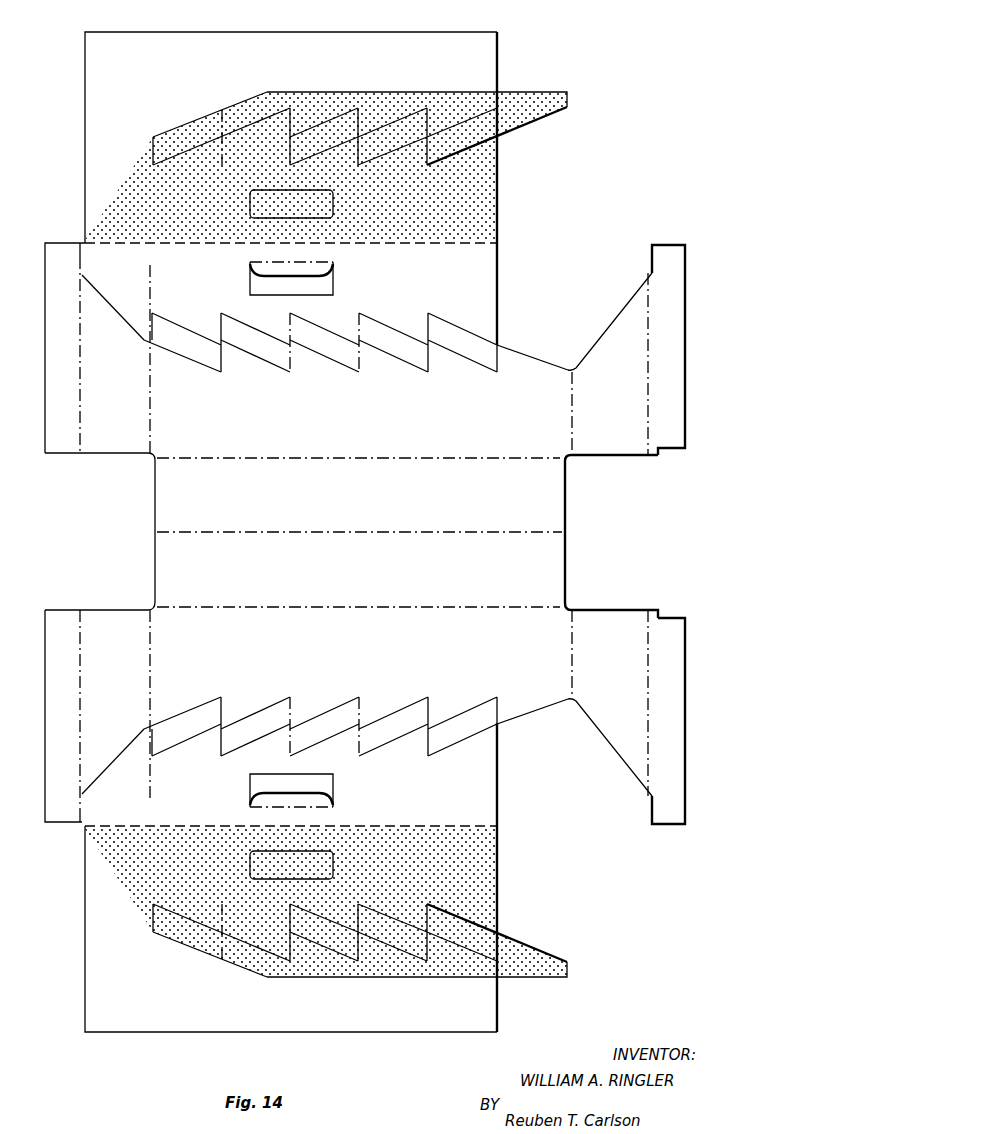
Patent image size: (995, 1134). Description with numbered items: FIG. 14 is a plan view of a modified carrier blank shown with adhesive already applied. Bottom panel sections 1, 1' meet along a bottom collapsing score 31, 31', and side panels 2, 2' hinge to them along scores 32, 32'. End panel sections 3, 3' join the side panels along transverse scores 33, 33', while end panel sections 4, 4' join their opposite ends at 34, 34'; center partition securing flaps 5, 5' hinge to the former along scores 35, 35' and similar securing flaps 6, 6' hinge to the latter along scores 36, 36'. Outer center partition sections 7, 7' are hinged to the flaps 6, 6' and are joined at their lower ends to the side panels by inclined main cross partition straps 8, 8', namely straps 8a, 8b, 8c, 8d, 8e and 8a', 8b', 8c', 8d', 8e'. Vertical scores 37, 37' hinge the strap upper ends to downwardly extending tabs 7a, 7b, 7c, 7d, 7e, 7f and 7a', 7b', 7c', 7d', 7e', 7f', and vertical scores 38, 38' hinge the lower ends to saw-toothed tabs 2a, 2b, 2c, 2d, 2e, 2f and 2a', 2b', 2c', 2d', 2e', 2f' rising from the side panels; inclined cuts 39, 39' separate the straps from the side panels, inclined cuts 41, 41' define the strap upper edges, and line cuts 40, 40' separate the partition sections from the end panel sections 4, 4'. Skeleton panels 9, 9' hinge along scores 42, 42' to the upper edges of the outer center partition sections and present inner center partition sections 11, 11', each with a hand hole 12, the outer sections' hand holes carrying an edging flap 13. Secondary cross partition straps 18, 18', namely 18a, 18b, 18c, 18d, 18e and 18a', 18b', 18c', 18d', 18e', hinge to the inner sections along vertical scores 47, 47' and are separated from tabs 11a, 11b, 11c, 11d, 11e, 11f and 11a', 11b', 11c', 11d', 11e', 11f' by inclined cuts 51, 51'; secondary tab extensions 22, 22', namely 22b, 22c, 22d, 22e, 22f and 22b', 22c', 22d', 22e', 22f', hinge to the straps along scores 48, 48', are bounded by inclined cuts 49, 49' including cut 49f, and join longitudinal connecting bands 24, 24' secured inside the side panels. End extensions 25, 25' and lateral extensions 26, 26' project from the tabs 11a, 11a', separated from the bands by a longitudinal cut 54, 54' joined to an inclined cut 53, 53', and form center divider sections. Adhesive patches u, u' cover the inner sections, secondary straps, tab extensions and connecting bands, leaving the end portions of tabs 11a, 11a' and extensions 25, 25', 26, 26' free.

The bottom panel 1 is at (360, 495).
The bottom panel 1' is at (360, 569).
The side wall panel 2 is at (358, 434).
The side wall panel 2' is at (358, 652).
The side wall section 2a is at (224, 357).
The side wall section 2b is at (291, 361).
The side wall section 2c is at (363, 358).
The side wall section 2d is at (432, 358).
The side wall section 2e is at (462, 365).
The side wall section 2f is at (527, 365).
The side wall section 2a' is at (224, 713).
The side wall section 2b' is at (293, 713).
The side wall section 2c' is at (363, 713).
The side wall section 2d' is at (432, 713).
The side wall section 2e' is at (462, 712).
The side wall section 2f' is at (527, 712).
The end wall panel 3 is at (610, 364).
The end wall panel 3' is at (610, 705).
The end wall panel 4 is at (128, 359).
The end wall panel 4' is at (126, 705).
The end flap 5 is at (683, 350).
The end flap 5' is at (668, 721).
The end flap 6 is at (65, 348).
The end flap 6' is at (63, 716).
The cover panel 7 is at (512, 202).
The cover panel 7' is at (520, 864).
The cover tab 7a is at (136, 324).
The cover tab 7b is at (186, 327).
The cover tab 7c is at (255, 327).
The cover tab 7d is at (324, 327).
The cover tab 7e is at (393, 327).
The cover tab 7f is at (462, 327).
The cover tab 7a' is at (136, 743).
The cover tab 7b' is at (186, 741).
The cover tab 7c' is at (255, 741).
The cover tab 7d' is at (324, 741).
The cover tab 7e' is at (393, 741).
The cover tab 7f' is at (462, 741).
The locking strip 8 is at (339, 331).
The locking strip 8' is at (342, 738).
The locking strip section 8a is at (186, 342).
The locking strip section 8b is at (262, 342).
The locking strip section 8c is at (331, 342).
The locking strip section 8d is at (393, 342).
The locking strip section 8e is at (462, 342).
The locking strip section 8a' is at (186, 726).
The locking strip section 8b' is at (262, 726).
The locking strip section 8c' is at (331, 726).
The locking strip section 8d' is at (393, 726).
The locking strip section 8e' is at (462, 726).
The glue panel 9 is at (319, 137).
The glue panel 9' is at (314, 929).
The glue area 11 is at (451, 202).
The glue area 11' is at (450, 866).
The glue area section 11a is at (93, 185).
The glue area section 11b is at (196, 190).
The window 11c is at (291, 204).
The window 11d is at (312, 204).
The glue area section 11e is at (393, 205).
The glue area section 11f is at (499, 167).
The glue area section 11a' is at (93, 880).
The glue area section 11b' is at (201, 881).
The window 11c' is at (290, 865).
The window 11d' is at (312, 865).
The glue area section 11e' is at (393, 865).
The glue area section 11f' is at (495, 902).
The handle opening 12 is at (263, 288).
The handle flap 13 is at (310, 262).
The finger flap series 18 is at (360, 110).
The finger flap series 18' is at (360, 936).
The finger flap 18a is at (156, 128).
The finger flap 18b is at (280, 102).
The finger flap 18c is at (313, 87).
The finger flap 18d is at (392, 104).
The finger flap 18e is at (479, 98).
The finger flap 18a' is at (175, 944).
The finger flap 18b' is at (252, 964).
The finger flap 18c' is at (320, 965).
The finger flap 18d' is at (391, 965).
The finger flap 18e' is at (482, 954).
The glue tab 22 is at (572, 125).
The glue tab 22' is at (574, 955).
The slanted cut 22b is at (221, 112).
The slanted cut 22c is at (323, 103).
The slanted cut 22d is at (392, 103).
The slanted cut 22e is at (462, 88).
The slanted cut 22f is at (498, 136).
The slanted cut 22b' is at (221, 954).
The slanted cut 22c' is at (320, 969).
The slanted cut 22d' is at (391, 969).
The slanted cut 22e' is at (454, 967).
The slanted cut 22f' is at (509, 933).
The glue flap 24 is at (451, 58).
The glue flap 24' is at (448, 965).
The panel corner 25 is at (152, 62).
The panel corner 25' is at (146, 1004).
The panel edge 26 is at (413, 51).
The panel edge 26' is at (436, 1004).
The fold line 31 is at (359, 522).
The fold line edge 31' is at (588, 532).
The fold line 32 is at (358, 470).
The fold line 32' is at (358, 593).
The fold line 33 is at (556, 413).
The fold line 33' is at (552, 653).
The corner cut 34 is at (100, 531).
The corner cut 34' is at (136, 599).
The fold line 35 is at (634, 364).
The fold line 35' is at (632, 703).
The fold line 36 is at (66, 355).
The fold line 36' is at (66, 696).
The cut end 37 is at (275, 328).
The cut end 37' is at (277, 738).
The cut end 38 is at (367, 365).
The cut end 38' is at (368, 702).
The cut edge 39 is at (324, 374).
The cut edge 39' is at (324, 697).
The diagonal cut 40 is at (113, 302).
The diagonal cut 40' is at (113, 764).
The cut end 41 is at (308, 312).
The cut end 41' is at (314, 754).
The fold line 42 is at (291, 257).
The fold line 42' is at (291, 815).
The finger edge 47 is at (279, 192).
The finger edge 47' is at (266, 876).
The finger edge 48 is at (356, 114).
The finger edge 48' is at (354, 953).
The finger edge 49 is at (221, 102).
The finger edge 49' is at (221, 964).
The finger edge 49f is at (520, 118).
The finger fold 51 is at (194, 210).
The finger fold 51' is at (369, 861).
The slanted edge 53 is at (210, 103).
The slanted edge 53' is at (197, 954).
The panel edge 54 is at (420, 51).
The panel edge 54' is at (331, 1017).
The unglued area u is at (305, 166).
The unglued area u' is at (300, 903).